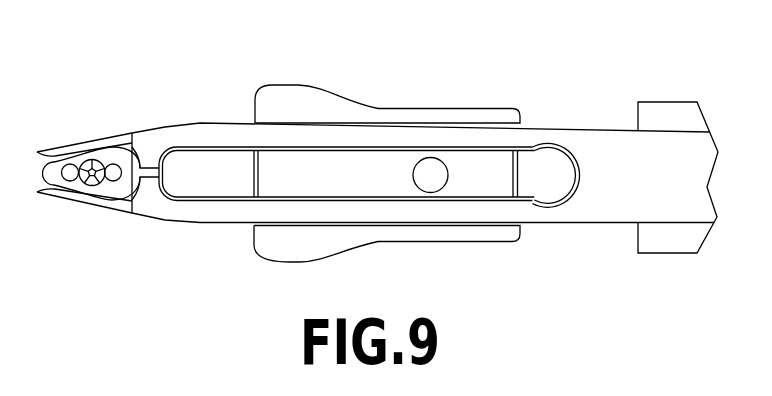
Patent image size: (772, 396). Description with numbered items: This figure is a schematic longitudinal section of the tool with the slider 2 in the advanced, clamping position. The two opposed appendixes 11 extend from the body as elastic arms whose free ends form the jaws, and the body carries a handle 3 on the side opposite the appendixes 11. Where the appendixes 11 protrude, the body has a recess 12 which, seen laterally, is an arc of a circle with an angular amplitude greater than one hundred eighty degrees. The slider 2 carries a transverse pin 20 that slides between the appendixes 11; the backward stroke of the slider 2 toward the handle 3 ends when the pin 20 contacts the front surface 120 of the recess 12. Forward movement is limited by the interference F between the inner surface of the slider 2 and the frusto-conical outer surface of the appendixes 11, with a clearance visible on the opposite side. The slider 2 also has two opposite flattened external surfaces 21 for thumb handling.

The slider 2 is at (342, 110).
The handle 3 is at (653, 116).
The appendixes 11 is at (178, 135).
The recess 12 is at (568, 148).
The transverse pin 20 is at (430, 175).
The flattened external surfaces 21 is at (472, 108).
The front surface of the recess 120 is at (580, 172).
The interference F is at (255, 122).